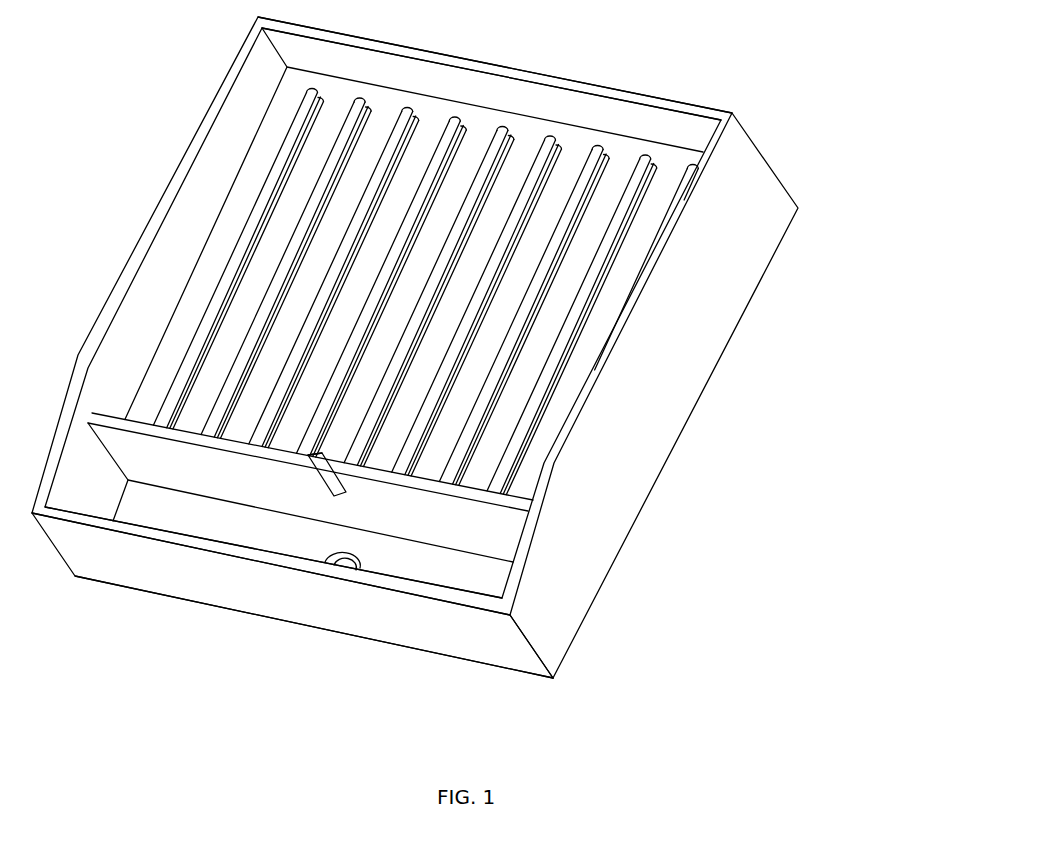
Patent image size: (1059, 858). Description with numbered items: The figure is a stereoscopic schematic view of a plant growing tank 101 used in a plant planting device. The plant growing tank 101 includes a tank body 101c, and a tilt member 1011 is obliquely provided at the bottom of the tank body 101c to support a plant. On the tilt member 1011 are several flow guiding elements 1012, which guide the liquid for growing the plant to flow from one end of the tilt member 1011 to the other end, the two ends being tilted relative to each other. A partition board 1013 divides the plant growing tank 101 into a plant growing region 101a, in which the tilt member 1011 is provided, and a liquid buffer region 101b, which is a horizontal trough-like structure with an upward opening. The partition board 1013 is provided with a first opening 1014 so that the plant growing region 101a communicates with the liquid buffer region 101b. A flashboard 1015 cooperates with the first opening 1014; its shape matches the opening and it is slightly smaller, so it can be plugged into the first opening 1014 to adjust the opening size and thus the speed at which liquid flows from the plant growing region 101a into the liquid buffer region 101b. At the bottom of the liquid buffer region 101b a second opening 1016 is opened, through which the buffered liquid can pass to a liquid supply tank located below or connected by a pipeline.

The plant growing tank 101 is at (93, 40).
The plant growing region 101a is at (574, 142).
The liquid buffer region 101b is at (405, 558).
The tank body 101c is at (602, 90).
The tilt member 1011 is at (475, 335).
The flow guiding element 1012 is at (528, 202).
The partition board 1013 is at (447, 507).
The first opening 1014 is at (335, 497).
The flashboard 1015 is at (316, 468).
The second opening 1016 is at (350, 562).